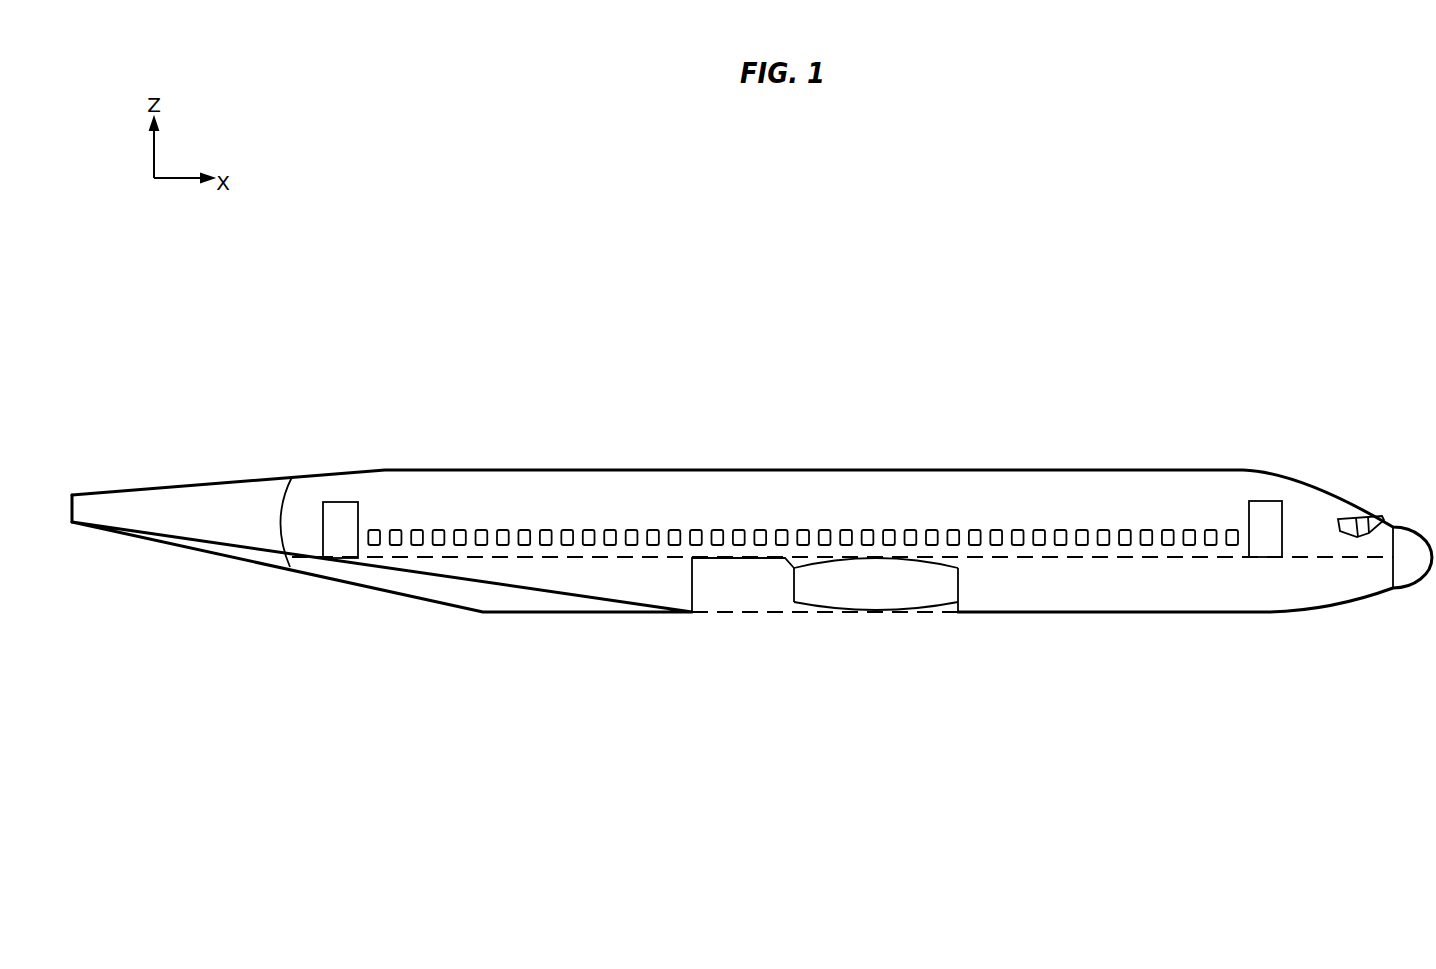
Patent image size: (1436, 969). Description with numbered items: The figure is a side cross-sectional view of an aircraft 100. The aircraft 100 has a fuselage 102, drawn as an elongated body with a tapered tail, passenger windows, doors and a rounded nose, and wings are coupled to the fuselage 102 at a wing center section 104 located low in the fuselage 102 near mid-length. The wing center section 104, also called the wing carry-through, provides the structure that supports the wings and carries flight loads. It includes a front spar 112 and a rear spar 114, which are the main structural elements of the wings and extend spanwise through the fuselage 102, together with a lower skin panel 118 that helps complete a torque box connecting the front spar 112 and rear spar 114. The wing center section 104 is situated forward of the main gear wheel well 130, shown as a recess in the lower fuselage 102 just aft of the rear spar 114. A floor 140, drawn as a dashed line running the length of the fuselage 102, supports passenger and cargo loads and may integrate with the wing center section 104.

The aircraft 100 is at (536, 204).
The fuselage 102 is at (1145, 460).
The wing center section 104 is at (878, 545).
The front spar 112 is at (978, 593).
The rear spar 114 is at (809, 588).
The lower skin panel 118 is at (914, 624).
The main gear wheel well 130 is at (730, 600).
The floor 140 is at (402, 570).